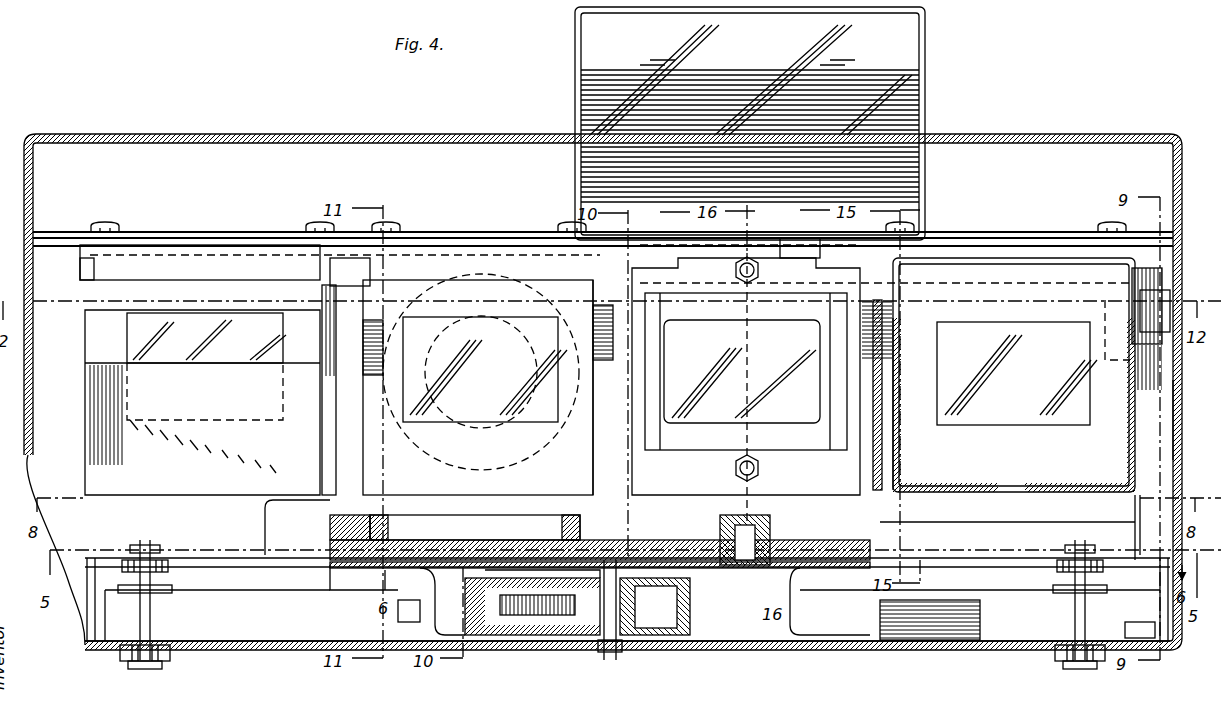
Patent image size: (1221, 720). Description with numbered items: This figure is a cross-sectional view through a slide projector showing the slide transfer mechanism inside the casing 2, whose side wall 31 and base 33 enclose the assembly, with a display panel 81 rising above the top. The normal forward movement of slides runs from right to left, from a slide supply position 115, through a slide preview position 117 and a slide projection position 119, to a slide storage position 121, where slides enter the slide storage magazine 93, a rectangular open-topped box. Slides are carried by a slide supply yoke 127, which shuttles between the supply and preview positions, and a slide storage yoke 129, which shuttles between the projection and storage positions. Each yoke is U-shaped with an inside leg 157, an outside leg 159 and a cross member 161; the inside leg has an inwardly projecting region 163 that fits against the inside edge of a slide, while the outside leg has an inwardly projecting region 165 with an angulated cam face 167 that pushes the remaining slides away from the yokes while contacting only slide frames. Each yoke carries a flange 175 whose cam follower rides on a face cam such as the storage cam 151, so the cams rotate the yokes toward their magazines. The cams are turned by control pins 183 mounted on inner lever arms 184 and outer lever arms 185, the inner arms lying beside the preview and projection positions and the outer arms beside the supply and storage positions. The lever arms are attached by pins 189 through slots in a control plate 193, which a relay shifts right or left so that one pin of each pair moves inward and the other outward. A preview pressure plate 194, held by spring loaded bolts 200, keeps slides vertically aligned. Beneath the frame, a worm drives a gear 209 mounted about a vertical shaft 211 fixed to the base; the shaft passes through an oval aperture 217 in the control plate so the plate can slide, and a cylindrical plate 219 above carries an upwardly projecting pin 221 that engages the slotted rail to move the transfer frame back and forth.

The casing 2 is at (24, 164).
The casing side wall 31 is at (1182, 420).
The base 33 is at (808, 648).
The display panel 81 is at (905, 57).
The slide storage magazine 93 is at (85, 376).
The slide supply position 115 is at (1032, 370).
The slide preview position 117 is at (754, 370).
The slide projection position 119 is at (484, 366).
The slide storage position 121 is at (211, 339).
The slide supply yoke 127 is at (985, 505).
The slide storage yoke 129 is at (332, 520).
The storage cam 151 is at (360, 568).
The inside leg 157 is at (596, 428).
The outside leg 159 is at (330, 440).
The cross member 161 is at (500, 480).
The inwardly projecting region 163 is at (596, 322).
The inwardly projecting region 165 is at (330, 300).
The angulated cam face 167 is at (1140, 305).
The yoke flange 175 is at (1140, 522).
The control pins 183 is at (150, 548).
The inner lever arms 184 is at (375, 593).
The outer lever arms 185 is at (170, 574).
The pins 189 is at (160, 618).
The control plate 193 is at (270, 594).
The preview pressure plate 194 is at (655, 352).
The spring loaded bolts 200 is at (760, 272).
The gear 209 is at (515, 635).
The vertical shaft 211 is at (610, 652).
The oval aperture 217 is at (648, 640).
The cylindrical plate 219 is at (495, 580).
The upwardly projecting pin 221 is at (735, 530).